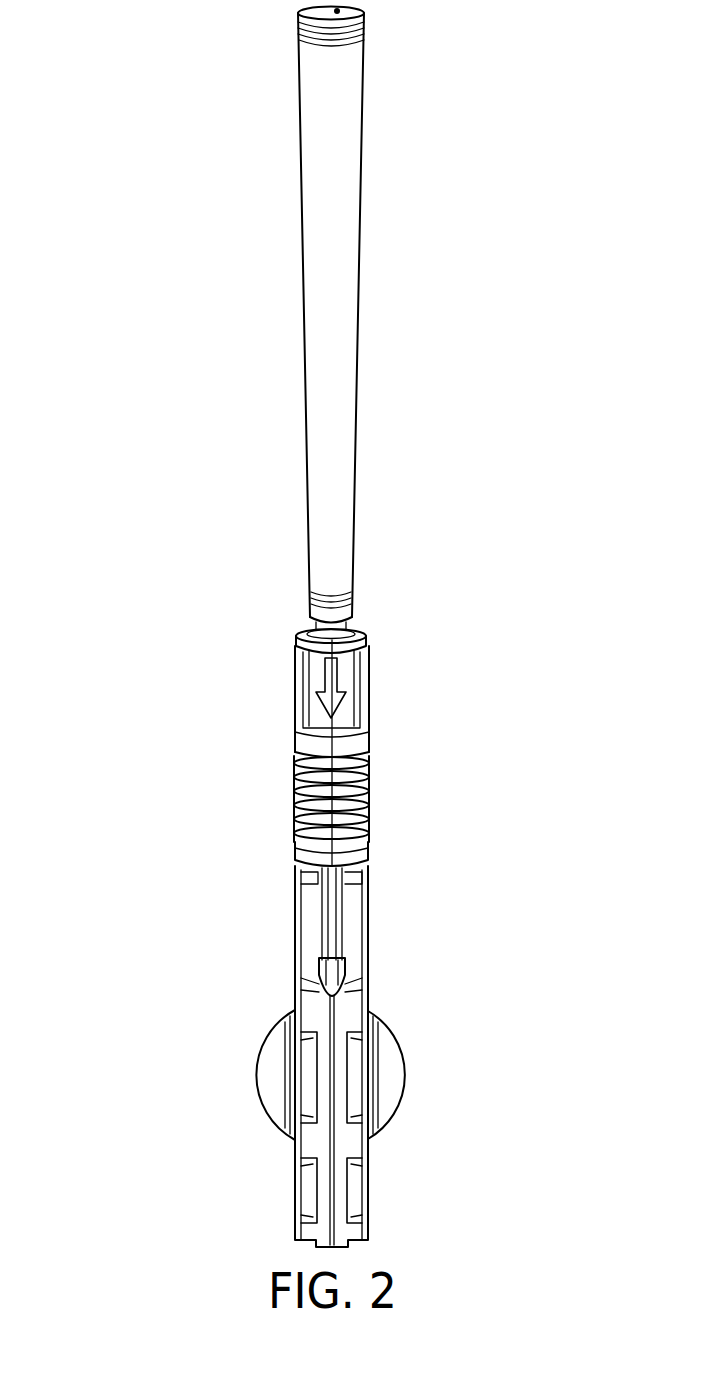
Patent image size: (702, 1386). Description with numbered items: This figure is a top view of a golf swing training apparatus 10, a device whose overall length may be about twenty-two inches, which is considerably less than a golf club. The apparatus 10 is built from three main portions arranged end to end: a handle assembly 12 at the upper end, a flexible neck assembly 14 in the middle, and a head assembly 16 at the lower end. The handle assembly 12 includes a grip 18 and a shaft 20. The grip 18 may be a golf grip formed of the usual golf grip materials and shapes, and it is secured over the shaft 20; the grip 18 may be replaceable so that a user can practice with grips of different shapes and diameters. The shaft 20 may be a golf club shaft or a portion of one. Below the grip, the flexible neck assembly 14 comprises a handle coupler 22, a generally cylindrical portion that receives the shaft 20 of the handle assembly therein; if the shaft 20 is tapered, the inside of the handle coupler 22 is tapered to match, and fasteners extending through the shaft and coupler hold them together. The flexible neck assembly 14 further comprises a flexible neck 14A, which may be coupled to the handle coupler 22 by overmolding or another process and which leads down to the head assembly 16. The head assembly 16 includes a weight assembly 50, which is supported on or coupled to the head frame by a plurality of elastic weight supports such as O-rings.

The golf swing training apparatus 10 is at (98, 350).
The handle assembly 12 is at (546, 600).
The flexible neck assembly 14 is at (546, 830).
The flexible neck 14A is at (296, 794).
The head assembly 16 is at (529, 1247).
The grip 18 is at (317, 247).
The shaft 20 is at (300, 636).
The handle coupler 22 is at (298, 692).
The weight assembly 50 is at (257, 1075).